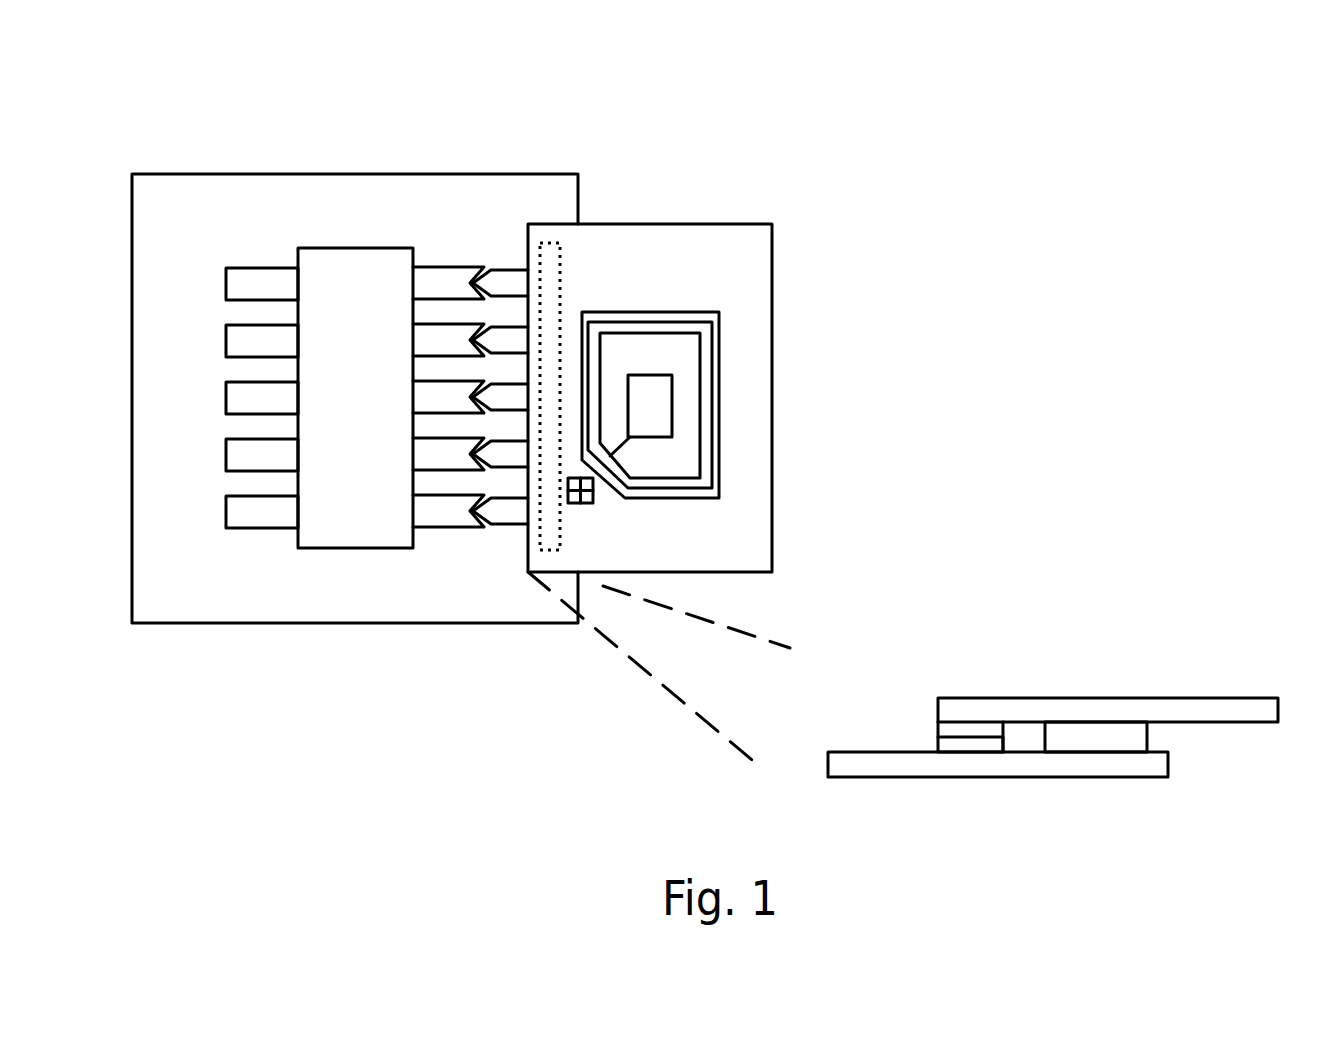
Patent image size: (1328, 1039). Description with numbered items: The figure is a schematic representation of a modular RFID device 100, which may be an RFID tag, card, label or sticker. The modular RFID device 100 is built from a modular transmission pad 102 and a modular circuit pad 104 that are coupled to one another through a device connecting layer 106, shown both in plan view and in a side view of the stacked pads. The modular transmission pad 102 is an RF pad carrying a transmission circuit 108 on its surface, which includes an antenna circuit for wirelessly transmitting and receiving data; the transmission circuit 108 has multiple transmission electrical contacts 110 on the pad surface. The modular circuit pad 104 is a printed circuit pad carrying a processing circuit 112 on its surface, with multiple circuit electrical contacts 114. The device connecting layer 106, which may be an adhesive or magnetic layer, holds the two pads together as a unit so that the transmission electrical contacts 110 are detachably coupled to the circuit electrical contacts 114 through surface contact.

The modular RFID device 100 is at (526, 78).
The modular transmission pad 102 is at (772, 392).
The modular circuit pad 104 is at (132, 275).
The device connecting layer 106 is at (560, 253).
The transmission circuit 108 is at (650, 312).
The transmission electrical contacts 110 is at (503, 268).
The processing circuit 112 is at (353, 248).
The circuit electrical contacts 114 is at (266, 268).